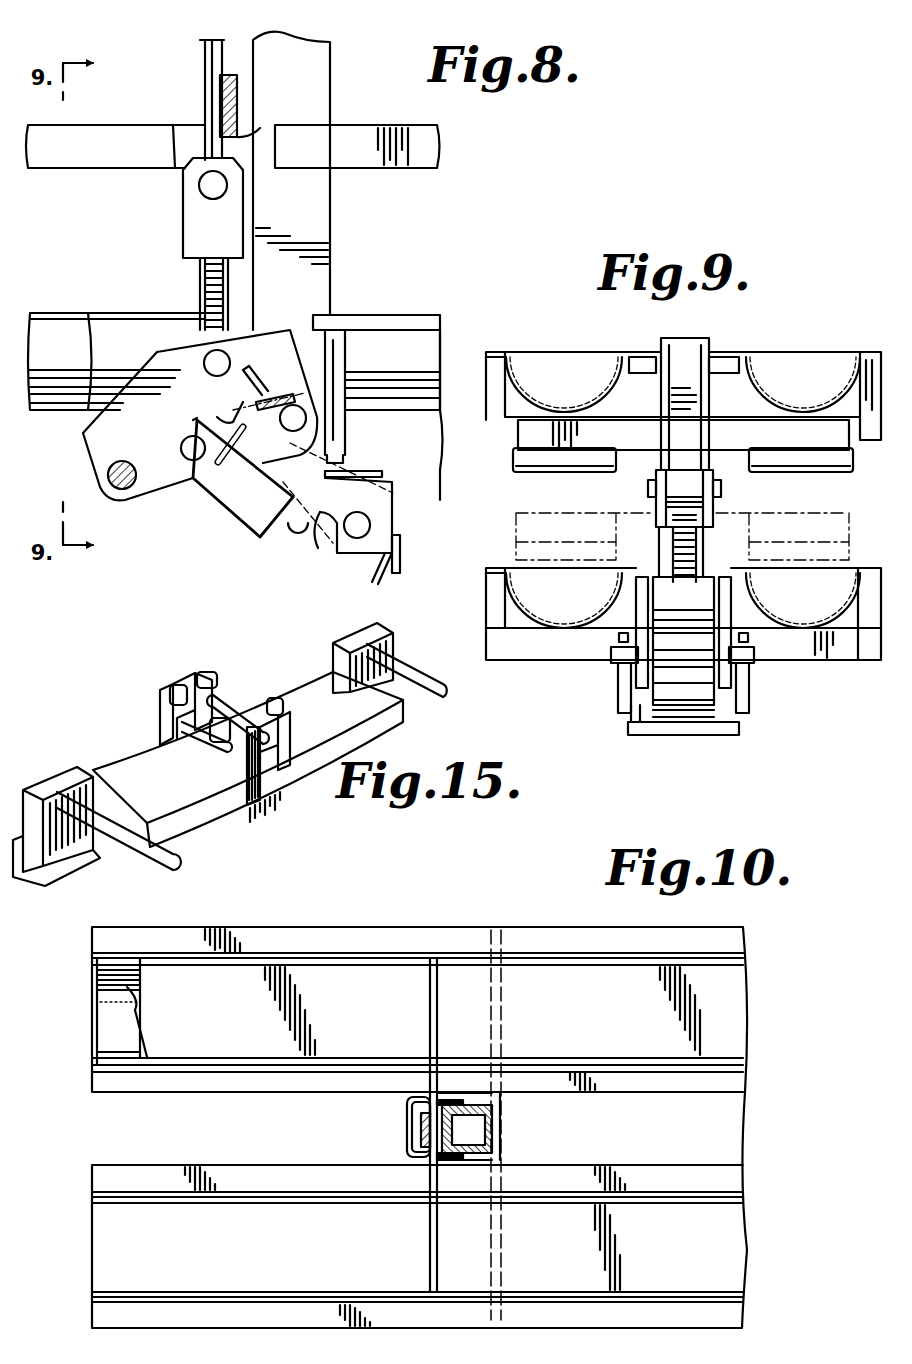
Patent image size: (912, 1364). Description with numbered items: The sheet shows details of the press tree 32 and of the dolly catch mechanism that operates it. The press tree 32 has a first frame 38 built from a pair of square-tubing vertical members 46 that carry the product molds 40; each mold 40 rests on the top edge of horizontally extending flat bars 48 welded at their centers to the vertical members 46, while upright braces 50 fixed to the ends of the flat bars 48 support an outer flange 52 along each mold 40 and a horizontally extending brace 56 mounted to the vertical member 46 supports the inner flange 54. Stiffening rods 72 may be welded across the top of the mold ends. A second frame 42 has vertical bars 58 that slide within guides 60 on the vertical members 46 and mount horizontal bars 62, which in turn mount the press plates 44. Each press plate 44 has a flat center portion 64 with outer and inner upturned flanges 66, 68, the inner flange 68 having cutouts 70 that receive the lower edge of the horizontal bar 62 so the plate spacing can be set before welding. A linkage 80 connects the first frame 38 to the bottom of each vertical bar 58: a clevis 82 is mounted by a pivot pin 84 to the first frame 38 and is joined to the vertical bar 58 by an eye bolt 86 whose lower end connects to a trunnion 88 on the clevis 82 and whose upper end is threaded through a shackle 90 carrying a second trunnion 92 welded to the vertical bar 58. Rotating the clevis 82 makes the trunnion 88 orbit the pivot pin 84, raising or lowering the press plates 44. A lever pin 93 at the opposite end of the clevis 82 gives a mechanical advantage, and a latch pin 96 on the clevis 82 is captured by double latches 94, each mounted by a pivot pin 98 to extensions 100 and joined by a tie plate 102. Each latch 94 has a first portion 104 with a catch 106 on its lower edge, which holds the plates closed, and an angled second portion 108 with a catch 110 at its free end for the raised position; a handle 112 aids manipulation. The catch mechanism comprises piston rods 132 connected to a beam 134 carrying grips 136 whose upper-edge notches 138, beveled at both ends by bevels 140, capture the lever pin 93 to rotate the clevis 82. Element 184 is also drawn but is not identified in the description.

In FIG. 8, the press tree 32 is at (360, 75).
In FIG. 9, the press tree 32 is at (795, 312).
In FIG. 10, the press tree 32 is at (765, 970).
In FIG. 8, the first frame 38 is at (310, 42).
In FIG. 9, the first frame 38 is at (688, 338).
In FIG. 10, the first frame 38 is at (472, 1160).
In FIG. 8, the product mold 40 is at (430, 335).
In FIG. 9, the product mold 40 is at (540, 402).
In FIG. 10, the product mold 40 is at (130, 988).
In FIG. 8, the second frame 42 is at (212, 40).
In FIG. 9, the second frame 42 is at (677, 345).
In FIG. 10, the second frame 42 is at (418, 1138).
In FIG. 8, the press plate 44 is at (380, 163).
In FIG. 9, the press plate 44 is at (536, 477).
In FIG. 10, the press plate 44 is at (140, 1025).
In FIG. 8, the vertical member 46 is at (330, 120).
In FIG. 9, the vertical member 46 is at (708, 344).
In FIG. 10, the vertical member 46 is at (500, 1122).
In FIG. 8, the flat bar 48 is at (345, 432).
In FIG. 9, the flat bar 48 is at (495, 437).
In FIG. 10, the flat bar 48 is at (503, 1005).
In FIG. 8, the upright brace 50 is at (345, 345).
In FIG. 9, the upright brace 50 is at (490, 412).
In FIG. 10, the upright brace 50 is at (496, 930).
In FIG. 8, the outer flange 52 is at (376, 345).
In FIG. 9, the outer flange 52 is at (498, 360).
In FIG. 10, the outer flange 52 is at (590, 930).
In FIG. 9, the inner flange 54 is at (630, 356).
In FIG. 10, the inner flange 54 is at (640, 1092).
In FIG. 9, the horizontally extending brace 56 is at (648, 372).
In FIG. 10, the horizontally extending brace 56 is at (500, 1105).
In FIG. 8, the vertical bar 58 is at (208, 53).
In FIG. 9, the vertical bar 58 is at (680, 372).
In FIG. 10, the vertical bar 58 is at (420, 1122).
In FIG. 10, the guide 60 is at (407, 1097).
In FIG. 8, the horizontal bar 62 is at (237, 78).
In FIG. 9, the horizontal bar 62 is at (858, 665).
In FIG. 10, the horizontal bar 62 is at (430, 1007).
In FIG. 9, the center portion 64 is at (578, 476).
In FIG. 10, the center portion 64 is at (262, 1011).
In FIG. 9, the outer upturned flange 66 is at (513, 462).
In FIG. 10, the outer upturned flange 66 is at (357, 966).
In FIG. 8, the inner upturned flange 68 is at (182, 132).
In FIG. 9, the inner upturned flange 68 is at (620, 455).
In FIG. 10, the inner upturned flange 68 is at (370, 1058).
In FIG. 8, the cutout 70 is at (260, 130).
In FIG. 10, the cutout 70 is at (437, 1060).
In FIG. 10, the stiffening rod 72 is at (92, 1005).
In FIG. 8, the linkage 80 is at (160, 505).
In FIG. 9, the linkage 80 is at (592, 694).
In FIG. 8, the clevis 82 is at (80, 444).
In FIG. 8, the pivot pin 84 is at (295, 405).
In FIG. 8, the eye bolt 86 is at (200, 292).
In FIG. 9, the eye bolt 86 is at (673, 555).
In FIG. 8, the trunnion 88 is at (204, 366).
In FIG. 9, the trunnion 88 is at (640, 598).
In FIG. 8, the shackle 90 is at (190, 240).
In FIG. 9, the shackle 90 is at (712, 510).
In FIG. 8, the second trunnion 92 is at (200, 190).
In FIG. 9, the second trunnion 92 is at (722, 486).
In FIG. 8, the lever pin 93 is at (108, 476).
In FIG. 9, the lever pin 93 is at (732, 680).
In FIG. 8, the latch 94 is at (240, 522).
In FIG. 9, the latch 94 is at (750, 706).
In FIG. 8, the latch pin 96 is at (182, 449).
In FIG. 9, the latch pin 96 is at (756, 653).
In FIG. 8, the pivot pin 98 is at (356, 512).
In FIG. 9, the pivot pin 98 is at (692, 735).
In FIG. 8, the extension 100 is at (368, 474).
In FIG. 8, the tie plate 102 is at (402, 556).
In FIG. 9, the tie plate 102 is at (735, 732).
In FIG. 8, the first portion 104 is at (318, 545).
In FIG. 9, the first portion 104 is at (632, 715).
In FIG. 8, the catch 106 is at (285, 535).
In FIG. 8, the second portion 108 is at (232, 508).
In FIG. 9, the second portion 108 is at (618, 676).
In FIG. 8, the catch 110 is at (192, 436).
In FIG. 9, the catch 110 is at (618, 648).
In FIG. 8, the handle 112 is at (217, 420).
In FIG. 15, the piston rod 132 is at (147, 862).
In FIG. 15, the beam 134 is at (193, 813).
In FIG. 15, the grip 136 is at (180, 680).
In FIG. 15, the notch 138 is at (248, 708).
In FIG. 15, the bevel 140 is at (215, 676).
In FIG. 8, the rod 184 is at (345, 560).